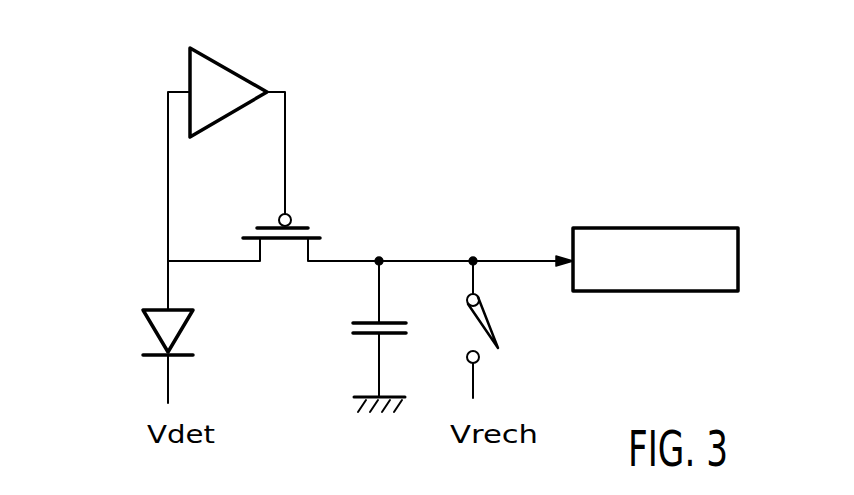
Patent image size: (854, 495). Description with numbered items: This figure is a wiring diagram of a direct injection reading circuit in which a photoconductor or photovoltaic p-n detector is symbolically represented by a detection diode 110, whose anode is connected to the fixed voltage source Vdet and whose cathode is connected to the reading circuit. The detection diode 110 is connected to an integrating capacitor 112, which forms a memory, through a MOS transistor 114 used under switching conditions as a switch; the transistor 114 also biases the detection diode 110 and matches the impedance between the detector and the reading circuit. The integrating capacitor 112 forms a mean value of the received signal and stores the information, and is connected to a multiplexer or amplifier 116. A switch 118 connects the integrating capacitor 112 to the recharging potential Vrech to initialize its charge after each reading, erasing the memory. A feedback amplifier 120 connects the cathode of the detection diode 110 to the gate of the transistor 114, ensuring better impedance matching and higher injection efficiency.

The detection diode 110 is at (152, 330).
The integrating capacitor 112 is at (352, 333).
The MOS transistor 114 is at (315, 230).
The multiplexer or amplifier 116 is at (695, 291).
The switch 118 is at (502, 328).
The feedback amplifier 120 is at (240, 75).